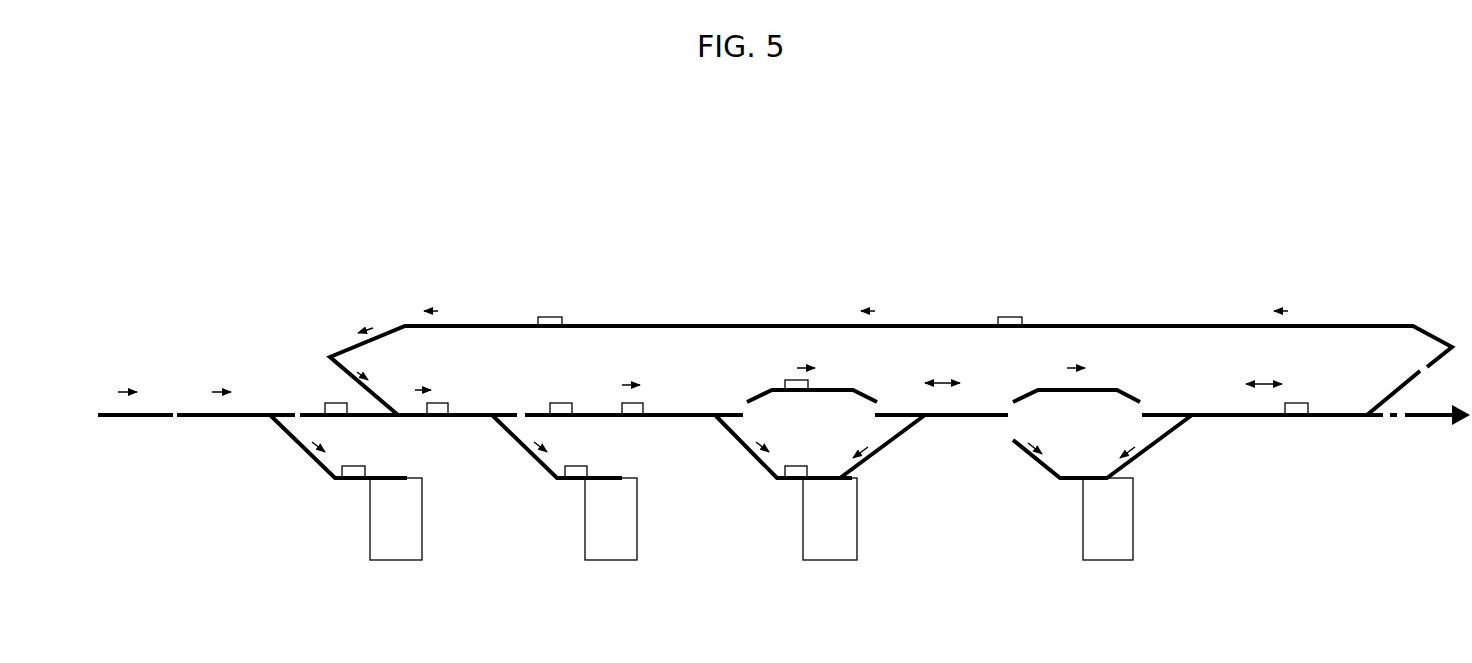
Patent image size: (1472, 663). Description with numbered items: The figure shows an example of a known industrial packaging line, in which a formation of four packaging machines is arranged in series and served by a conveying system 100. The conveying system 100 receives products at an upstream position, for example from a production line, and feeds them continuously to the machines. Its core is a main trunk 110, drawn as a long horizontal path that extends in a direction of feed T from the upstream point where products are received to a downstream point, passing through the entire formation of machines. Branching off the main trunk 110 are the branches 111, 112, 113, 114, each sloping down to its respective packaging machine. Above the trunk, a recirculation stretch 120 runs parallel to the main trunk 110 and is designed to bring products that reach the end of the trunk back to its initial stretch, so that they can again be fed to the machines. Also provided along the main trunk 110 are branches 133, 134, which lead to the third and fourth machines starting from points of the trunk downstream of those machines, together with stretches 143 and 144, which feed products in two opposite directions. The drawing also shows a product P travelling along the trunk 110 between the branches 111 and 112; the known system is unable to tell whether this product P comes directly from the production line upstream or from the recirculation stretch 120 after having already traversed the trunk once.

The conveying system 100 is at (283, 374).
The main trunk 110 is at (224, 426).
The branch 111 is at (315, 462).
The branch 112 is at (525, 446).
The branch 113 is at (752, 455).
The branch 114 is at (1030, 460).
The recirculation stretch 120 is at (723, 318).
The branch 133 is at (880, 450).
The branch 134 is at (1160, 448).
The stretch 143 is at (960, 413).
The stretch 144 is at (1263, 418).
The product P is at (440, 410).
The direction of feed T is at (1430, 427).